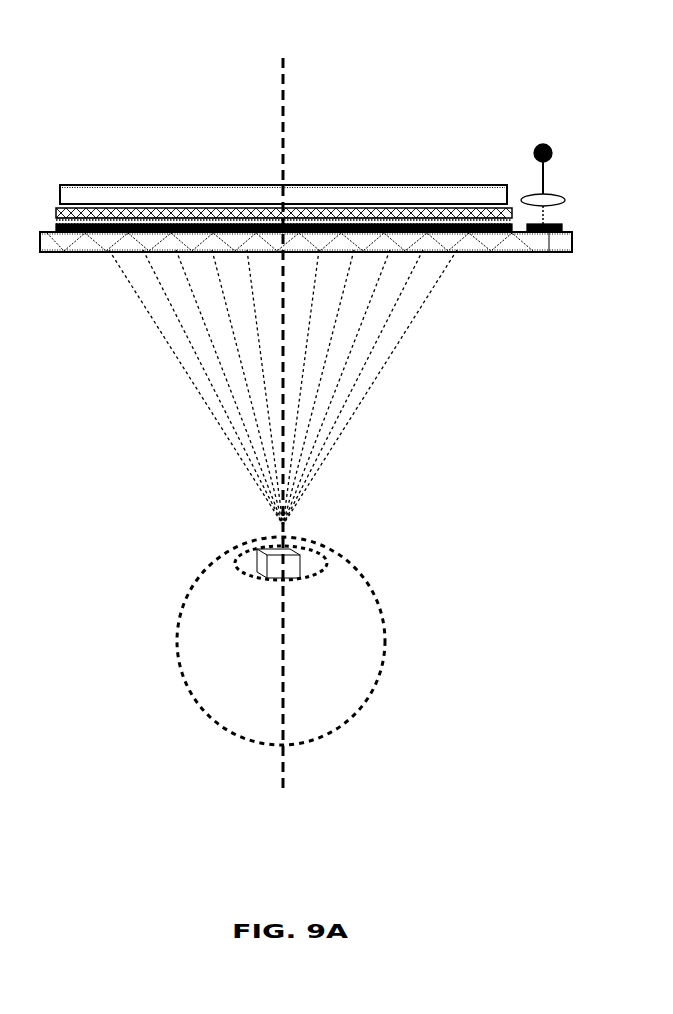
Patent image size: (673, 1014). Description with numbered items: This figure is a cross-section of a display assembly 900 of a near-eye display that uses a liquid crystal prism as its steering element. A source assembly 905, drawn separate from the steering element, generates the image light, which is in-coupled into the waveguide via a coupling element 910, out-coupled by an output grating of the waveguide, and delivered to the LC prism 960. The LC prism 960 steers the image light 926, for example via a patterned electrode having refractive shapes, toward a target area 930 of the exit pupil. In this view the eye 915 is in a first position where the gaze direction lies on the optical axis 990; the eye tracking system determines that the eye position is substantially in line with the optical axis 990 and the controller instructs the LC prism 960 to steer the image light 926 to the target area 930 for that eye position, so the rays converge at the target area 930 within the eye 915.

The display assembly 900 is at (384, 172).
The source assembly 905 is at (572, 138).
The coupling element 910 is at (550, 252).
The eye 915 is at (188, 688).
The image light 926 is at (203, 397).
The target area 930 is at (296, 573).
The LC prism 960 is at (55, 207).
The optical axis 990 is at (285, 790).